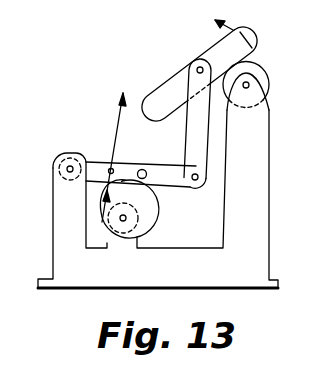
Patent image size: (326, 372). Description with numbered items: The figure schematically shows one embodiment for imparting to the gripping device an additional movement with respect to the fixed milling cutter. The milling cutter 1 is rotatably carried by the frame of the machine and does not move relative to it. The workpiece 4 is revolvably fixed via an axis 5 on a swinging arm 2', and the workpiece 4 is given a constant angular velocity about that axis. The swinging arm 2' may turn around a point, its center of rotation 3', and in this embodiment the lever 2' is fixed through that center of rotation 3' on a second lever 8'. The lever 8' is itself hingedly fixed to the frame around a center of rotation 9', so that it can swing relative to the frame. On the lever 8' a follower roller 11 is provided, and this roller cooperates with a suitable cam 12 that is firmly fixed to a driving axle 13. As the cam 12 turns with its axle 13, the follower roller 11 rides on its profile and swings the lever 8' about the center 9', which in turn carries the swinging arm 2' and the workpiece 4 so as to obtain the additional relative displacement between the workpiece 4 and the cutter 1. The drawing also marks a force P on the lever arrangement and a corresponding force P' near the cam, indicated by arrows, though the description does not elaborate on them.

The milling cutter 1 is at (264, 80).
The swinging arm 2' is at (187, 119).
The center of rotation 3' is at (189, 194).
The workpiece 4 is at (250, 43).
The axis 5 is at (199, 66).
The lever 8' is at (146, 166).
The center of rotation 9' is at (53, 169).
The follower roller 11 is at (142, 168).
The cam 12 is at (153, 219).
The driving axle 13 is at (125, 215).
The force P is at (114, 149).
The reaction force P' is at (101, 215).